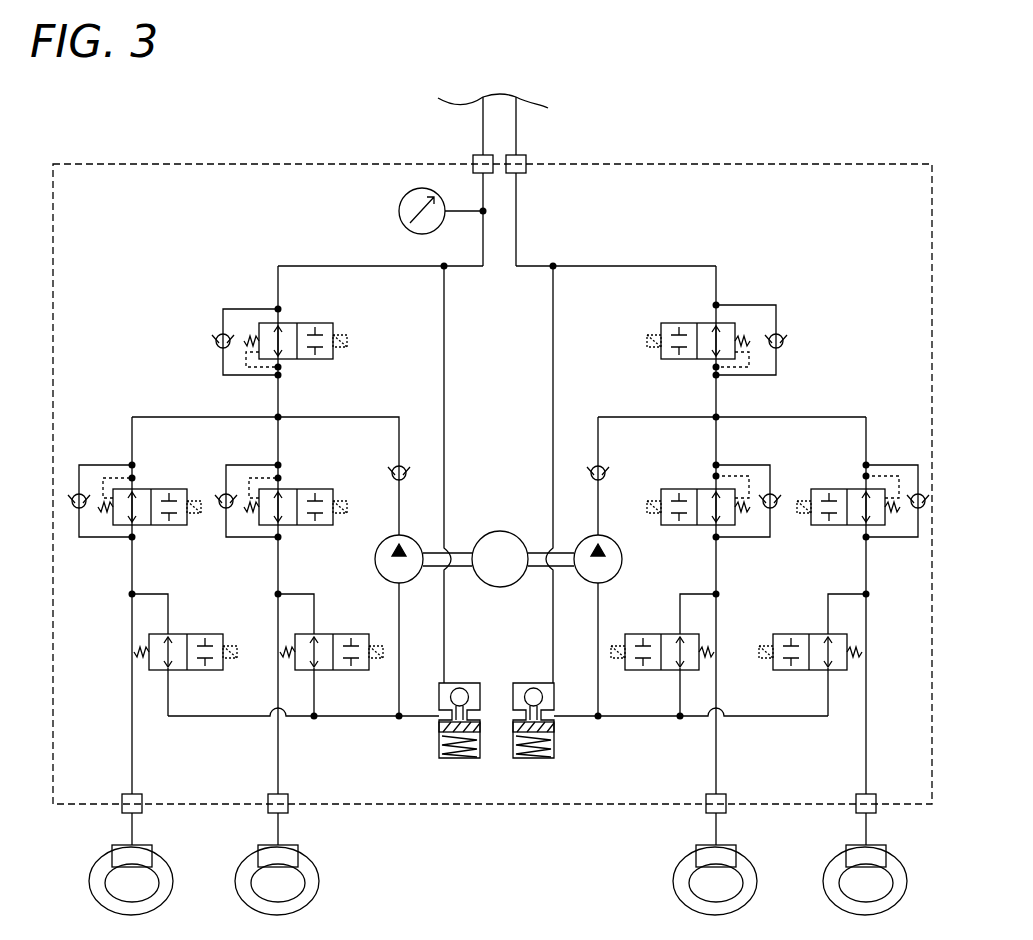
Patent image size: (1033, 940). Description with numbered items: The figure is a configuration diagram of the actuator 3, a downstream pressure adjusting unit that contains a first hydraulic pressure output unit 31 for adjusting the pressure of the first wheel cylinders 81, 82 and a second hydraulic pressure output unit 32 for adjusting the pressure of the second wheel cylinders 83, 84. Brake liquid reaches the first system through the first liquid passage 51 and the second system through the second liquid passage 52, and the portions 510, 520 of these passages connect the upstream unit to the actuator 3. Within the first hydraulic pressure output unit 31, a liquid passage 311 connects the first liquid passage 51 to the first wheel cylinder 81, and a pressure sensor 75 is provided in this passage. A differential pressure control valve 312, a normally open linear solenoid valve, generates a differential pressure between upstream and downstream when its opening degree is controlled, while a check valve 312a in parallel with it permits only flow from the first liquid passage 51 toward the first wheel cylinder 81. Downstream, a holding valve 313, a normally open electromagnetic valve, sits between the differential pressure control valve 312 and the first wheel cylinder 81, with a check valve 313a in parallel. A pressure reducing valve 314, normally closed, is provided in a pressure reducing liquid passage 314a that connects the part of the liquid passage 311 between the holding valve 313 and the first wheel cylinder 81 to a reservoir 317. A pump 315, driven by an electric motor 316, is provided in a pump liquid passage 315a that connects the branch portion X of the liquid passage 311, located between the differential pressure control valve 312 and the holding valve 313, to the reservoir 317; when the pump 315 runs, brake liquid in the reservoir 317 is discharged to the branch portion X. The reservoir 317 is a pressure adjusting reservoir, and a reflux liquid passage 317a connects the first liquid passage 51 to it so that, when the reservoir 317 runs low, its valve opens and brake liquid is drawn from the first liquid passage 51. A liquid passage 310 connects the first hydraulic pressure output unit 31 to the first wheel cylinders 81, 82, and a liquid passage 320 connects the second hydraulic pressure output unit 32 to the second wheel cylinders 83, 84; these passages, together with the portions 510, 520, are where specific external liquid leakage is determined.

The actuator 3 is at (196, 146).
The first hydraulic pressure output unit 31 is at (154, 258).
The second hydraulic pressure output unit 32 is at (834, 258).
The first liquid passage 51 is at (483, 128).
The second liquid passage 52 is at (517, 135).
The portion of the first liquid passage 510 is at (480, 115).
The portion of the second liquid passage 520 is at (517, 115).
The pressure sensor 75 is at (400, 214).
The liquid passage 311 is at (305, 265).
The differential pressure control valve 312 is at (327, 322).
The check valve 312a is at (215, 335).
The holding valve 313 is at (183, 488).
The check valve 313a is at (76, 492).
The pressure reducing valve 314 is at (212, 633).
The pressure reducing liquid passage 314a is at (227, 718).
The pump 315 is at (375, 560).
The pump liquid passage 315a is at (343, 416).
The electric motor 316 is at (502, 528).
The reservoir 317 is at (437, 750).
The reflux liquid passage 317a is at (447, 460).
The branch portion X is at (276, 417).
The first wheel cylinder 81 is at (117, 842).
The first wheel cylinder 82 is at (267, 842).
The second wheel cylinder 83 is at (703, 845).
The second wheel cylinder 84 is at (857, 843).
The liquid passage 310 is at (134, 826).
The liquid passage 320 is at (718, 828).